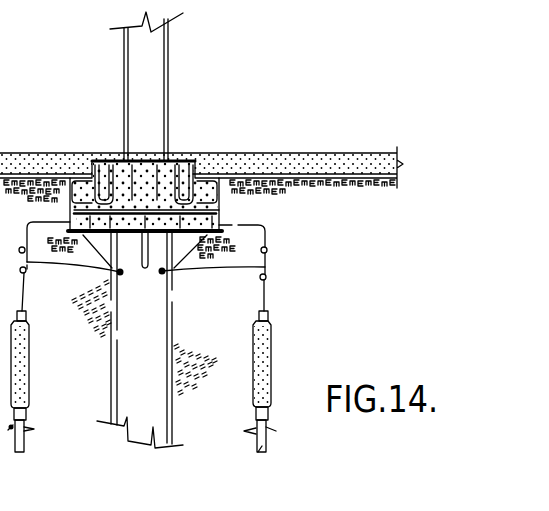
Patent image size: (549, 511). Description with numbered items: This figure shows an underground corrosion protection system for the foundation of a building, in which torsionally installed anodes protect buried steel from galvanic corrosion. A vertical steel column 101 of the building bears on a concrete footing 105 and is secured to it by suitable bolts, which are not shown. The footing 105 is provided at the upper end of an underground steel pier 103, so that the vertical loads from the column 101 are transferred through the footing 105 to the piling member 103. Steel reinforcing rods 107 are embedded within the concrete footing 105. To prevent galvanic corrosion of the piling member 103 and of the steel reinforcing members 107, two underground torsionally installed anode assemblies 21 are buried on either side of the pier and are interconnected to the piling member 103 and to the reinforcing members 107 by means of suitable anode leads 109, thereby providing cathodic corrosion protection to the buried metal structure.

The vertical column 101 is at (168, 107).
The steel pier 103 is at (174, 399).
The concrete footing 105 is at (220, 210).
The steel reinforcing rods 107 is at (221, 200).
The anode leads 109 is at (262, 268).
The anode assembly 21 is at (31, 360).